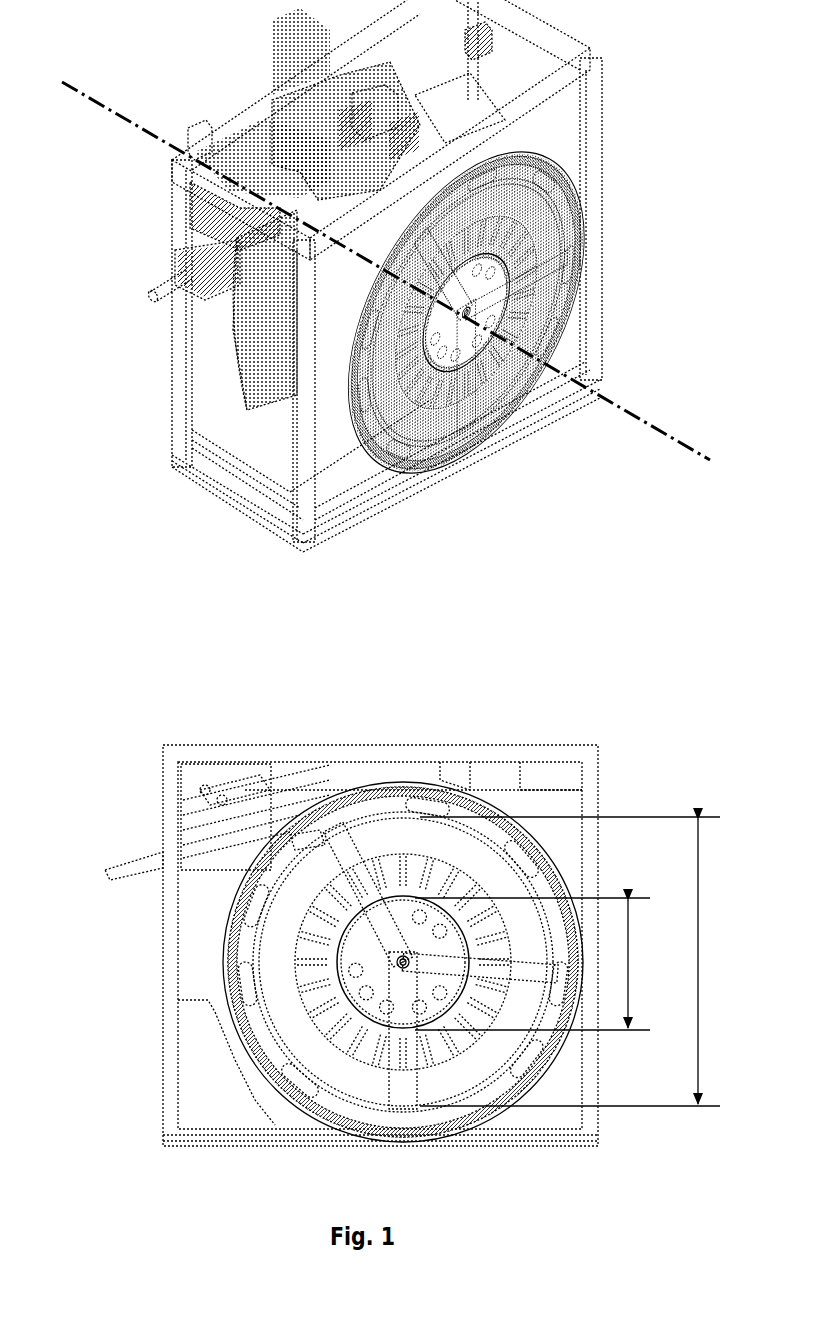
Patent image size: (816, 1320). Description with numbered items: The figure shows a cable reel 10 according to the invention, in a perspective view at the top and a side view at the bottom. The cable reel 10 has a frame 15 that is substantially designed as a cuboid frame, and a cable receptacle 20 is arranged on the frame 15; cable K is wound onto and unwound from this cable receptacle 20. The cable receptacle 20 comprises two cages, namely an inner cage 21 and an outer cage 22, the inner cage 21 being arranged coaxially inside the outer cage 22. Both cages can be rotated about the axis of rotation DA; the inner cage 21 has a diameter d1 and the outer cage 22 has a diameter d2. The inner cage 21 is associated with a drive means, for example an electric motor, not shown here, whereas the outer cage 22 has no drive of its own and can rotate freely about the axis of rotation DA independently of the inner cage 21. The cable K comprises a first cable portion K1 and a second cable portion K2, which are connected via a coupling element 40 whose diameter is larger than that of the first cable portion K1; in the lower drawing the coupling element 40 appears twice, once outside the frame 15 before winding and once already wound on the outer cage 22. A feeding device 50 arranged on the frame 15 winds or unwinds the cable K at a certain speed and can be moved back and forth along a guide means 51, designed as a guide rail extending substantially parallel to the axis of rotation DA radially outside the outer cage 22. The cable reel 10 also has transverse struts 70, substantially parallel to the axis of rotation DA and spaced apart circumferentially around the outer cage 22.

The cable reel 10 is at (143, 70).
The frame 15 is at (597, 108).
The cable receptacle 20 is at (551, 312).
The inner cage 21 is at (515, 251).
The outer cage 22 is at (555, 197).
The coupling element 40 is at (172, 264).
The feeding device 50 is at (248, 178).
The guide means 51 is at (228, 213).
The transverse struts 70 is at (318, 194).
The cable K is at (202, 370).
The first cable portion K1 is at (360, 346).
The second cable portion K2 is at (265, 300).
The axis of rotation DA is at (386, 271).
The diameter of the inner cage d1 is at (537, 964).
The diameter of the outer cage d2 is at (577, 961).